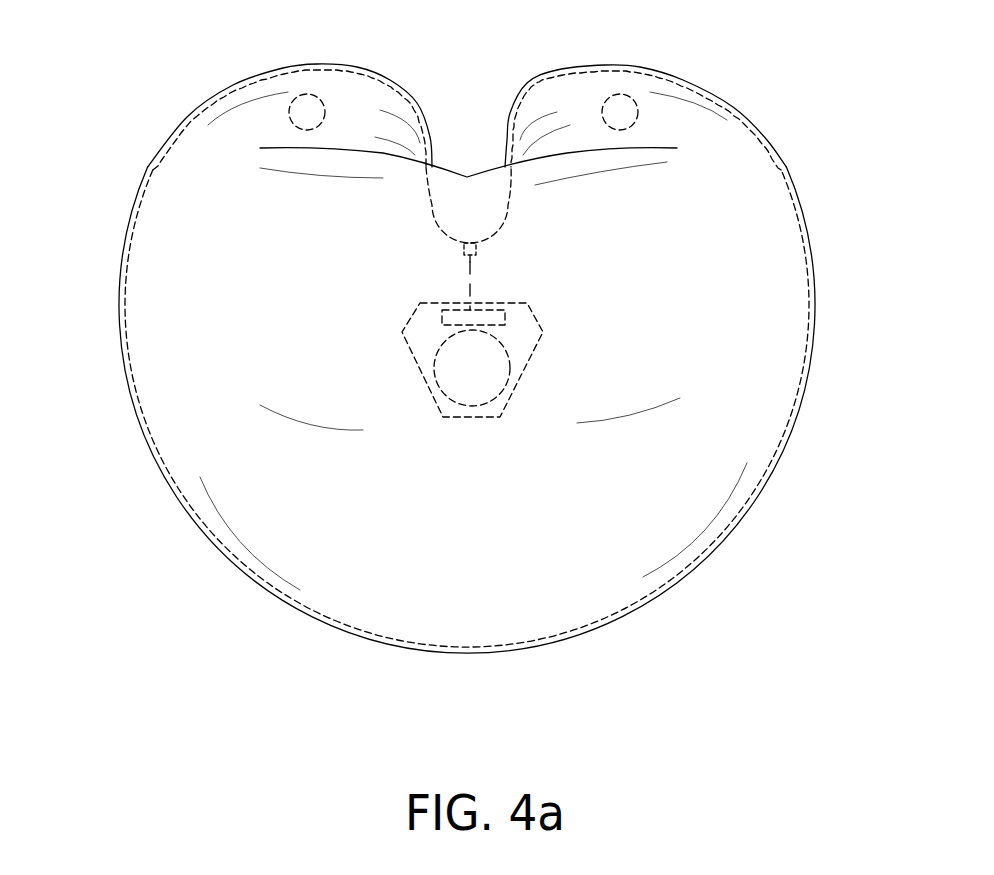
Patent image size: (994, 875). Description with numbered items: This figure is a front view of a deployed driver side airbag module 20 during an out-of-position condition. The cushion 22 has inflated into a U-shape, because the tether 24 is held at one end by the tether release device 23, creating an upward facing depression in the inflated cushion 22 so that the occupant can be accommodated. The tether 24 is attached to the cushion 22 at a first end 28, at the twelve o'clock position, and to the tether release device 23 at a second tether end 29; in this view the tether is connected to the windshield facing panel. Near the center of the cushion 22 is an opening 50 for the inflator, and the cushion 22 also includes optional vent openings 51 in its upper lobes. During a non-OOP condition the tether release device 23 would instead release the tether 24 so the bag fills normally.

The cushion 22 is at (138, 235).
The vent openings 51 is at (320, 93).
The first end 28 is at (462, 250).
The tether 24 is at (473, 257).
The second tether end 29 is at (472, 311).
The tether release device 23 is at (440, 315).
The driver side airbag module 20 is at (402, 348).
The opening 50 is at (512, 368).